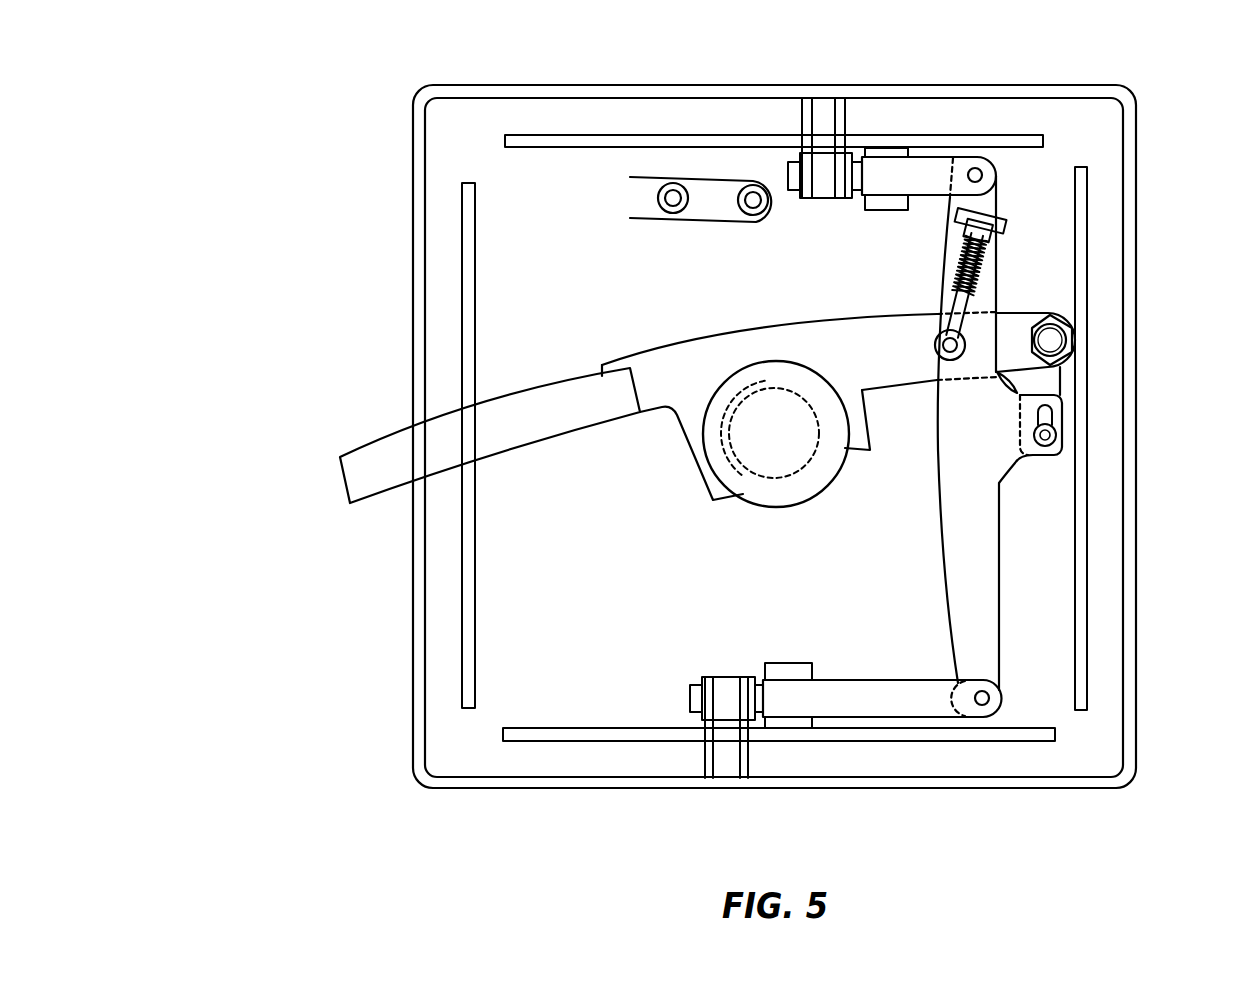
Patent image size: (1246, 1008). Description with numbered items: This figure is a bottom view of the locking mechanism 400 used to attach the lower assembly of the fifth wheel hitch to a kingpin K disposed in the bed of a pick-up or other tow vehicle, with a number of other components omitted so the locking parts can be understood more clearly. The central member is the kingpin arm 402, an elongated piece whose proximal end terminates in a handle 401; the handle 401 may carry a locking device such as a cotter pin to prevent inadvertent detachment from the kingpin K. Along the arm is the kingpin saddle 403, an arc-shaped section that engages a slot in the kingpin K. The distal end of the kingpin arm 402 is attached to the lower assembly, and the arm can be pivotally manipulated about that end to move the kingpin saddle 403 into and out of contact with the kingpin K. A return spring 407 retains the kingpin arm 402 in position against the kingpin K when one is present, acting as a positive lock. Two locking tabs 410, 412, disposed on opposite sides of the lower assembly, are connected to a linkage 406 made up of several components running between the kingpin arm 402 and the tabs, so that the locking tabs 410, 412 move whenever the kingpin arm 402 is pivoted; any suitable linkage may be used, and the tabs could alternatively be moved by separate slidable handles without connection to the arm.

The locking mechanism 400 is at (330, 363).
The handle 401 is at (345, 483).
The kingpin arm 402 is at (690, 402).
The kingpin saddle 403 is at (866, 430).
The kingpin K is at (802, 480).
The linkage 406 is at (973, 537).
The return spring 407 is at (973, 270).
The locking tab 410 is at (923, 177).
The locking tab 412 is at (895, 697).